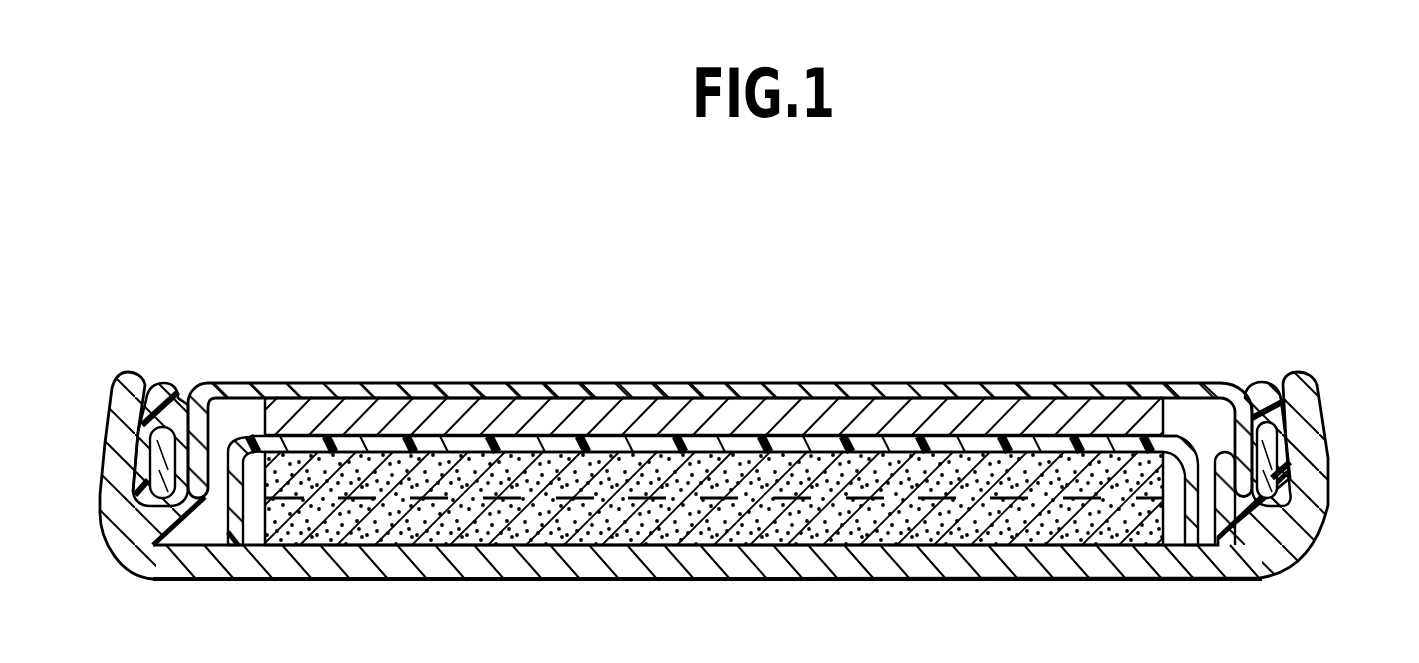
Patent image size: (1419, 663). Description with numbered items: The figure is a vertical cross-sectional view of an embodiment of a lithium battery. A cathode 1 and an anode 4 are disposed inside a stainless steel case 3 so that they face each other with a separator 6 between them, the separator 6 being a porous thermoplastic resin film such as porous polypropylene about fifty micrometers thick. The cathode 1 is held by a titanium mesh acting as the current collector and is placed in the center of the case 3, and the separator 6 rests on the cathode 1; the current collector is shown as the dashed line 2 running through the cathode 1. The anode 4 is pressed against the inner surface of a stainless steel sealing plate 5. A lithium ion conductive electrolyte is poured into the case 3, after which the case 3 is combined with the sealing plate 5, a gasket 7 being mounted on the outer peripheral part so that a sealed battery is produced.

The cathode 1 is at (370, 527).
The current collector 2 is at (801, 500).
The case 3 is at (1127, 562).
The anode 4 is at (522, 405).
The sealing plate 5 is at (331, 383).
The separator 6 is at (788, 445).
The gasket 7 is at (1273, 498).